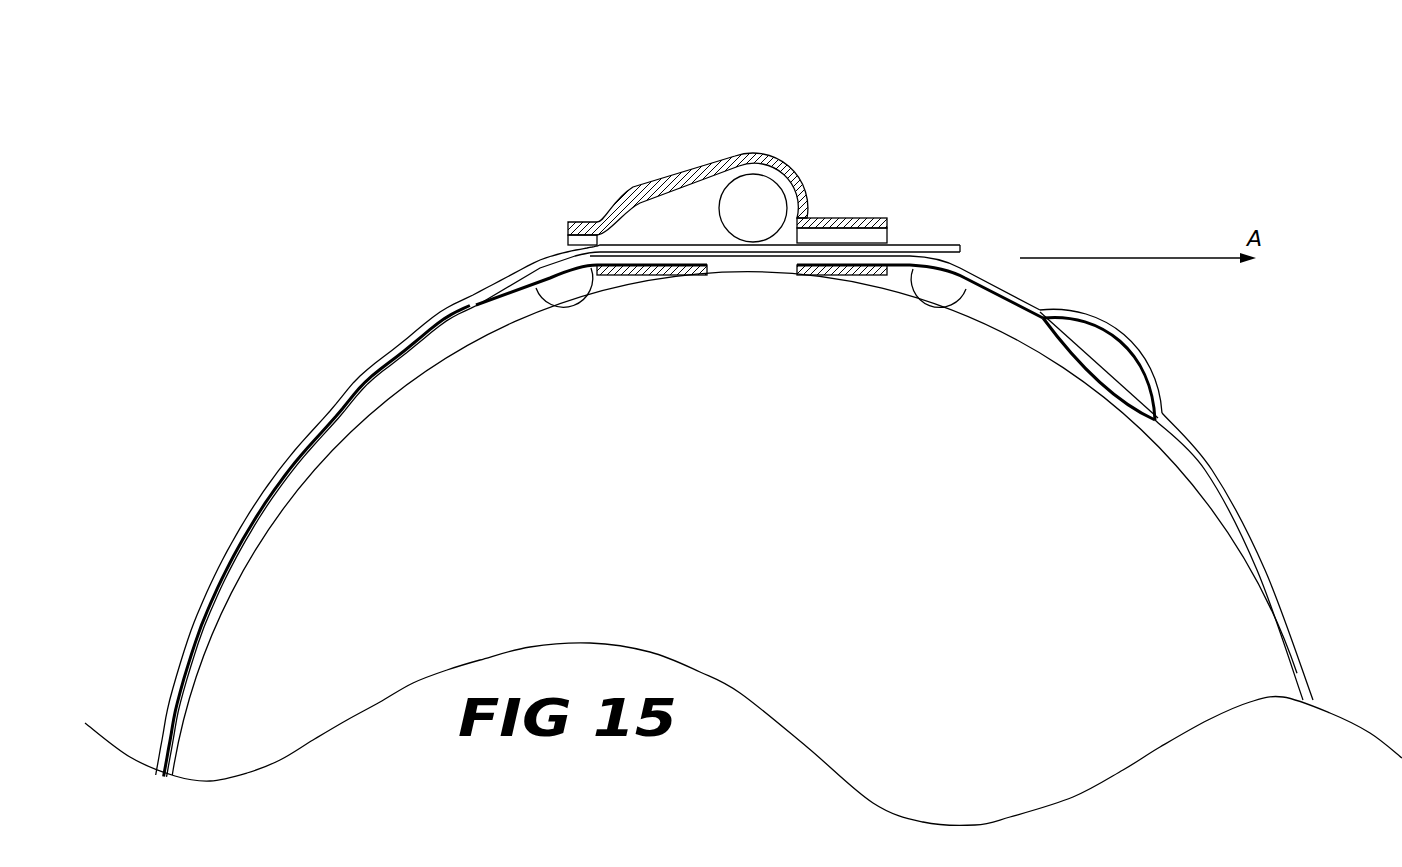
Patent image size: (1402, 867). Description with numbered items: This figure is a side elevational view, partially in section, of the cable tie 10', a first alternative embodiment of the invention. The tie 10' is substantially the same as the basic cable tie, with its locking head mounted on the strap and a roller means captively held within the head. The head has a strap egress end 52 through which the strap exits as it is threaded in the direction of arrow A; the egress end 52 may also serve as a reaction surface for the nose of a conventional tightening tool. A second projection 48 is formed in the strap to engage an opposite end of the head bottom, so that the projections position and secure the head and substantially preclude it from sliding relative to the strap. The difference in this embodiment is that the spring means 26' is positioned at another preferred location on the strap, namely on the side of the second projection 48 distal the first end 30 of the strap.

The tie 10' is at (789, 174).
The strap egress end 52 is at (887, 218).
The spring means 26' is at (1108, 339).
The second projection 48 is at (930, 290).
The first end 30 is at (466, 318).